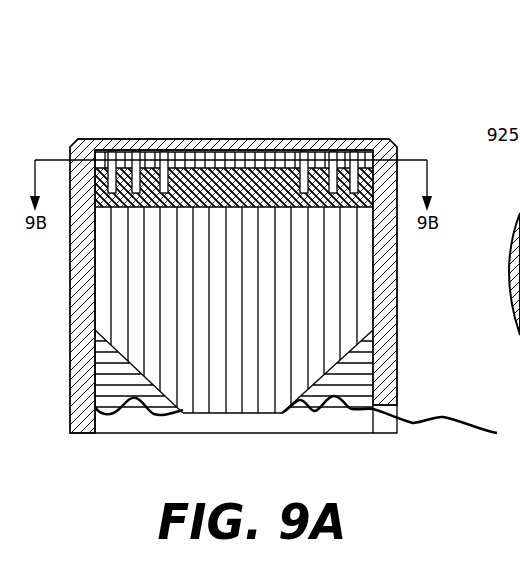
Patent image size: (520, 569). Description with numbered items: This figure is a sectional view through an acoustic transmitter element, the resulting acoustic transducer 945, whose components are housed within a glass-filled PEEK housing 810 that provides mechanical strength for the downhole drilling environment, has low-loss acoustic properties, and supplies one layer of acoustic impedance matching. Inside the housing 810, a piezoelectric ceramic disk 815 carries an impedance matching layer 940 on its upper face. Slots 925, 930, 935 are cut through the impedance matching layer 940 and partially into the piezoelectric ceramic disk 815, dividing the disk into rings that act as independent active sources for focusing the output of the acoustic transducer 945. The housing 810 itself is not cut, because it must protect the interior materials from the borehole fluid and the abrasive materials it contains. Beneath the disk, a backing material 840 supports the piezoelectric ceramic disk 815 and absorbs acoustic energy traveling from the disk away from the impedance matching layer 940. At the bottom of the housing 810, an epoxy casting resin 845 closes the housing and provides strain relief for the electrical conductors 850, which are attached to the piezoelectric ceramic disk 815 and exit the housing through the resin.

The housing 810 is at (390, 340).
The piezoelectric ceramic disk 815 is at (97, 205).
The backing material 840 is at (345, 254).
The epoxy casting resin 845 is at (358, 386).
The electrical conductors 850 is at (447, 418).
The slot 925 is at (303, 155).
The slot 930 is at (333, 155).
The slot 935 is at (355, 155).
The impedance matching layer 940 is at (100, 157).
The acoustic transducer 945 is at (159, 74).